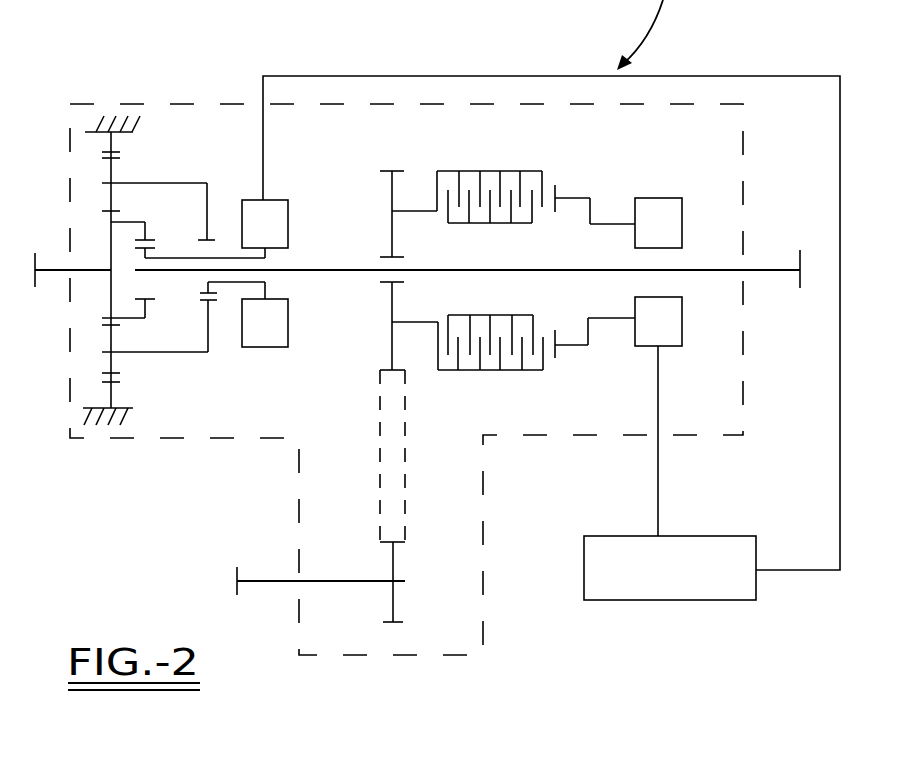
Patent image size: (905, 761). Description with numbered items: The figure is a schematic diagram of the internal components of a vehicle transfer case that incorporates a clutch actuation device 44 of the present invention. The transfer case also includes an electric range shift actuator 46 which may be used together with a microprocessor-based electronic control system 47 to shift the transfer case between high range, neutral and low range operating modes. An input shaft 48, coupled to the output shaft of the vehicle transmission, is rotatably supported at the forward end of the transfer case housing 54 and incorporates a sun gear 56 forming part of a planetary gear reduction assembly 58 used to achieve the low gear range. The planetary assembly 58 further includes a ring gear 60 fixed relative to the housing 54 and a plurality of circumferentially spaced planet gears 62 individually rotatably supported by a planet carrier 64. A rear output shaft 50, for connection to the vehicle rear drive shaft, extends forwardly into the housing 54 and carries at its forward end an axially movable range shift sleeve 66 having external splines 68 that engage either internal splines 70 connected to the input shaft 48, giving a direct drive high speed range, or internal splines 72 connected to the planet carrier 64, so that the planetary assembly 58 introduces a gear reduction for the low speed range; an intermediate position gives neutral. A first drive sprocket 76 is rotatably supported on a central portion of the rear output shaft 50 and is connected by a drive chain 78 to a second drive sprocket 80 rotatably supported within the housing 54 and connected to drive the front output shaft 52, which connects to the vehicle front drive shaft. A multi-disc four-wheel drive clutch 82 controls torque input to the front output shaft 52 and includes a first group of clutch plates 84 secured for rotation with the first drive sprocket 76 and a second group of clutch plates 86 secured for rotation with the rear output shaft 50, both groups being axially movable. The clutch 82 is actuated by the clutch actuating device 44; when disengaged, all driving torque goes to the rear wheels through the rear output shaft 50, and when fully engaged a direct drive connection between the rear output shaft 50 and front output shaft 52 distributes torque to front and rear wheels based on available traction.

The clutch actuation device 44 is at (659, 190).
The electric range shift actuator 46 is at (296, 245).
The electronic control system 47 is at (658, 600).
The input shaft 48 is at (62, 272).
The rear output shaft 50 is at (772, 265).
The front output shaft 52 is at (259, 580).
The transfer case housing 54 is at (448, 104).
The sun gear 56 is at (110, 223).
The planetary gear reduction assembly 58 is at (92, 204).
The ring gear 60 is at (110, 143).
The planet gears 62 is at (105, 175).
The planet carrier 64 is at (161, 353).
The range shift sleeve 66 is at (225, 256).
The external splines 68 is at (152, 247).
The internal splines 70 is at (150, 296).
The internal splines 72 is at (200, 299).
The first drive sprocket 76 is at (392, 189).
The drive chain 78 is at (381, 405).
The second drive sprocket 80 is at (393, 598).
The four-wheel drive clutch 82 is at (530, 381).
The first group of clutch plates 84 is at (498, 187).
The second group of clutch plates 86 is at (472, 327).